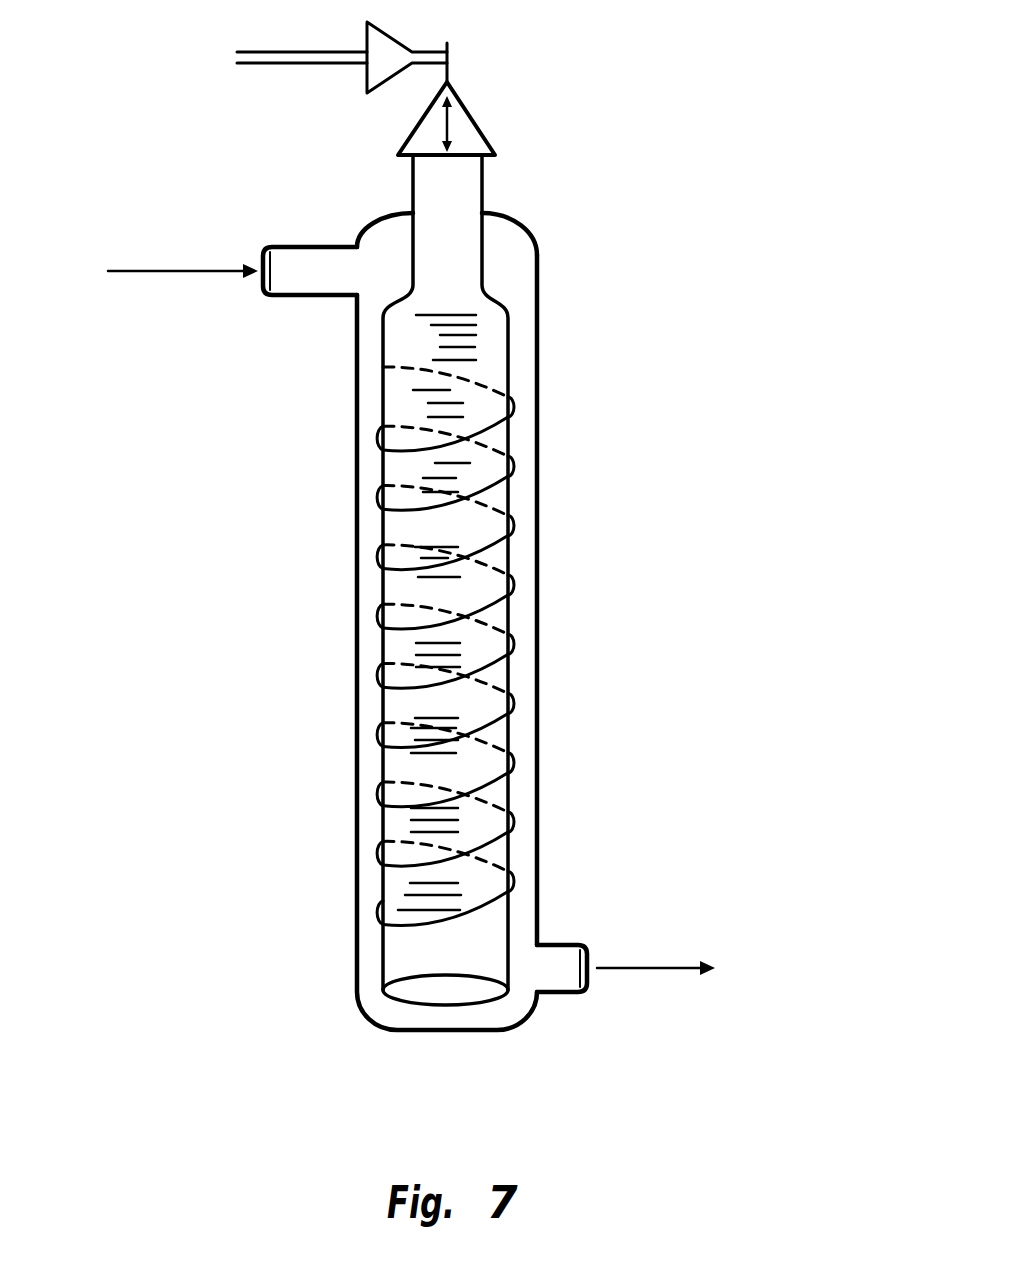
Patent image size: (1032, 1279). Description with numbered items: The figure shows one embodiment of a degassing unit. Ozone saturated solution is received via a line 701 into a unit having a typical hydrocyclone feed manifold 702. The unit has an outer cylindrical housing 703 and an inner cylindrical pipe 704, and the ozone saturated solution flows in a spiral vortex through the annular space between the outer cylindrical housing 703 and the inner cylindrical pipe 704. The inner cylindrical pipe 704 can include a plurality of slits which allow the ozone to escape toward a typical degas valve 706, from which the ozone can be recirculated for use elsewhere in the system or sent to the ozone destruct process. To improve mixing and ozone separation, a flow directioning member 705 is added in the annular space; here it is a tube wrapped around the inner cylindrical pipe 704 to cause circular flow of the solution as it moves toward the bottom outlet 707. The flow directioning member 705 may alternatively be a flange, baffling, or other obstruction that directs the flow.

The line 701 is at (295, 246).
The hydrocyclone feed manifold 702 is at (500, 243).
The outer cylindrical housing 703 is at (355, 550).
The inner cylindrical pipe 704 is at (487, 332).
The flow directioning member 705 is at (517, 397).
The degas valve 706 is at (463, 120).
The bottom outlet 707 is at (562, 942).